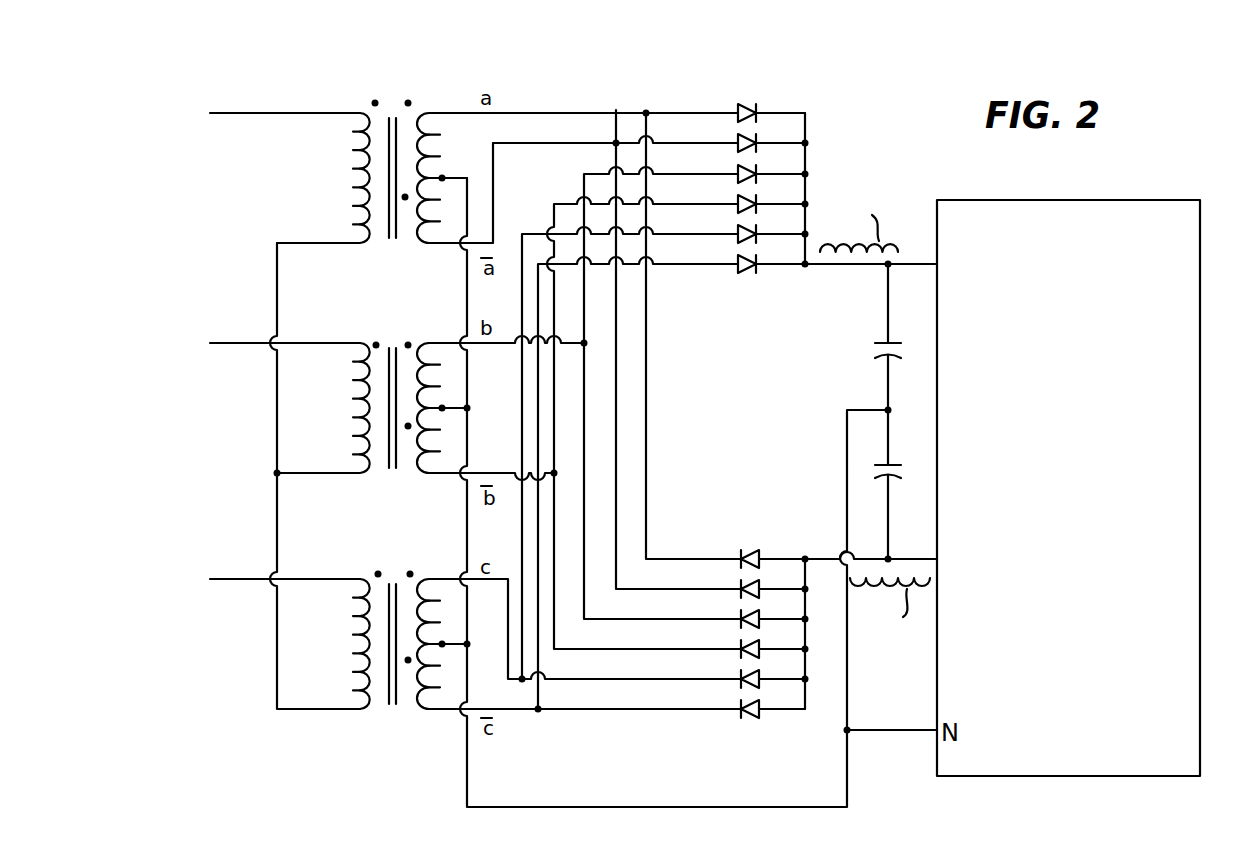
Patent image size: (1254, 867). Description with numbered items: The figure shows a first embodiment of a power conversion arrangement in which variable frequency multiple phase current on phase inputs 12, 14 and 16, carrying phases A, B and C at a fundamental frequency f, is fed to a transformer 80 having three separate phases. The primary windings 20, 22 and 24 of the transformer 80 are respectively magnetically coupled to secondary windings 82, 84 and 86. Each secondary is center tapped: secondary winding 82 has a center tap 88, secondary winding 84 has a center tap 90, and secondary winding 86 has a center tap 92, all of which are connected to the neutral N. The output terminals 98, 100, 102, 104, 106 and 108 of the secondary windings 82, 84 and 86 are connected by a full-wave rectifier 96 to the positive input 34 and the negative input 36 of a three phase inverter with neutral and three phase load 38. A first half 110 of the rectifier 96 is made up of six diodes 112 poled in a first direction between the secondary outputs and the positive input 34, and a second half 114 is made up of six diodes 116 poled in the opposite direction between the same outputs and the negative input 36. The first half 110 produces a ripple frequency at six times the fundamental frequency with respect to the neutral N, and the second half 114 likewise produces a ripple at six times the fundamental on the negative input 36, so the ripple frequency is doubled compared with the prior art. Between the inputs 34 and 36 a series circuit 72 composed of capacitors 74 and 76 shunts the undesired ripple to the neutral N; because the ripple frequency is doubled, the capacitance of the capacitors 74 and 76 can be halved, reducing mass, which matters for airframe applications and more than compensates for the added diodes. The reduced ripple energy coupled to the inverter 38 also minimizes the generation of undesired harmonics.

The phase input 12 is at (213, 120).
The phase input 14 is at (213, 350).
The phase input 16 is at (213, 587).
The primary winding 20 is at (340, 168).
The primary winding 22 is at (332, 406).
The primary winding 24 is at (332, 649).
The positive input 34 is at (934, 262).
The negative input 36 is at (930, 568).
The three phase inverter with neutral and three phase load 38 is at (1082, 597).
The series circuit 72 is at (912, 390).
The capacitor 74 is at (871, 344).
The capacitor 76 is at (898, 487).
The transformer 80 is at (362, 745).
The secondary winding 82 is at (445, 148).
The secondary winding 84 is at (450, 389).
The secondary winding 86 is at (452, 620).
The center tap 88 is at (444, 180).
The center tap 90 is at (443, 412).
The center tap 92 is at (443, 647).
The full-wave rectifier 96 is at (676, 370).
The output terminal 98 is at (647, 111).
The output terminal 100 is at (616, 110).
The output terminal 102 is at (586, 343).
The output terminal 104 is at (553, 471).
The output terminal 106 is at (524, 677).
The output terminal 108 is at (540, 710).
The first half of the rectifier 110 is at (753, 290).
The diode 112 is at (750, 103).
The second half of the rectifier 114 is at (752, 532).
The diode 116 is at (748, 722).